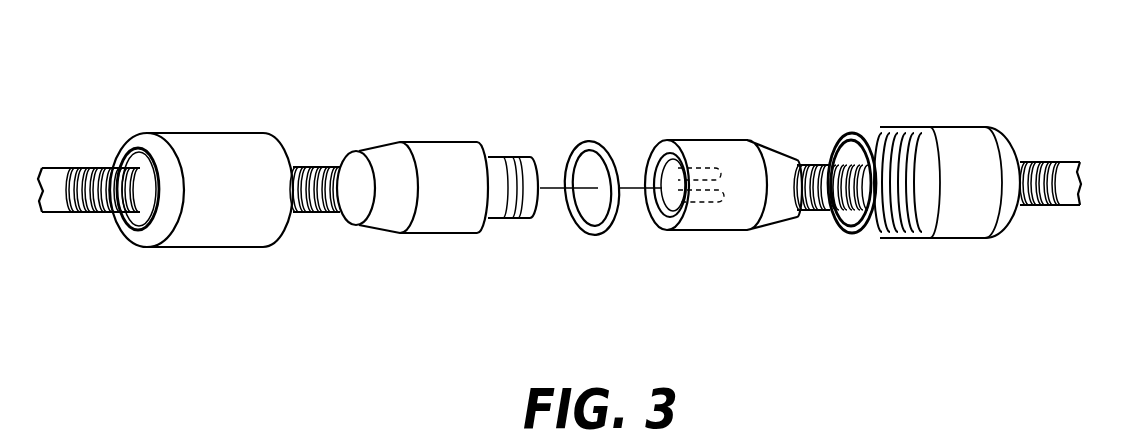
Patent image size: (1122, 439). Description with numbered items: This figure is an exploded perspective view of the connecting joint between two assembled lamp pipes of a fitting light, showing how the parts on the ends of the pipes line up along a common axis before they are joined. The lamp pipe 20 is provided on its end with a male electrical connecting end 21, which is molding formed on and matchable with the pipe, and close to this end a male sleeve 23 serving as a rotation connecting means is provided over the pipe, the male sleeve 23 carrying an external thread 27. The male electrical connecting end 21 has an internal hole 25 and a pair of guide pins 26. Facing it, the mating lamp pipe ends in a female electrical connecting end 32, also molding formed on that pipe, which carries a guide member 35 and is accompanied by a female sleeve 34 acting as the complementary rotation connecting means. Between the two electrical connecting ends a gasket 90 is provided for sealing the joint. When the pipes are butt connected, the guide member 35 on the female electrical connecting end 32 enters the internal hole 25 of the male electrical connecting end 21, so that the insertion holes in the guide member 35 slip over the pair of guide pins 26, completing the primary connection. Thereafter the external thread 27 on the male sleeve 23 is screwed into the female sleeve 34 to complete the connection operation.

The lamp pipe 20 is at (1053, 207).
The male electrical connecting end 21 is at (713, 142).
The male sleeve 23 is at (945, 223).
The internal hole 25 is at (658, 143).
The guide pins 26 is at (680, 200).
The external thread 27 is at (885, 135).
The female electrical connecting end 32 is at (437, 217).
The female sleeve 34 is at (223, 203).
The guide member 35 is at (510, 218).
The gasket 90 is at (602, 235).